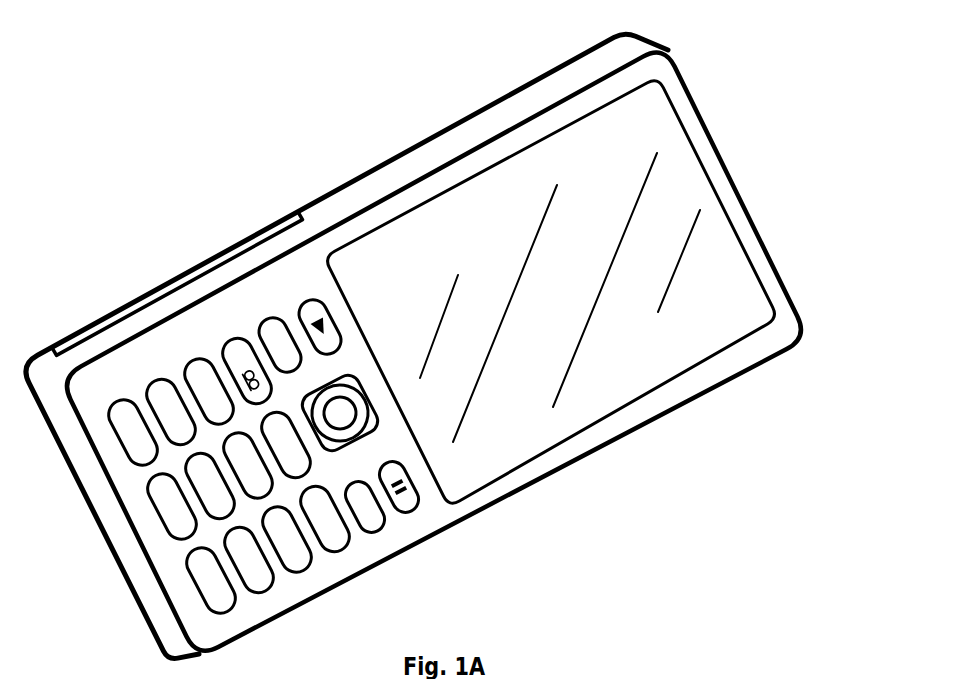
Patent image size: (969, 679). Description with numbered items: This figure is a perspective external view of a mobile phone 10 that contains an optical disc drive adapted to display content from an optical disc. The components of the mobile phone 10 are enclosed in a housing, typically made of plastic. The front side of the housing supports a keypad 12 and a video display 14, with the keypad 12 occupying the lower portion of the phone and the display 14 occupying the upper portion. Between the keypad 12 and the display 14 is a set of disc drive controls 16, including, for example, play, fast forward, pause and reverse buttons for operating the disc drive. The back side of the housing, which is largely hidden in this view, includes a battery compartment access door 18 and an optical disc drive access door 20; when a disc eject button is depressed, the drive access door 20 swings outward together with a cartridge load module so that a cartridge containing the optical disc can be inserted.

The mobile phone 10 is at (790, 91).
The keypad 12 is at (348, 614).
The video display 14 is at (512, 178).
The disc drive controls 16 is at (448, 556).
The battery compartment access door 18 is at (211, 236).
The optical disc drive access door 20 is at (646, 676).